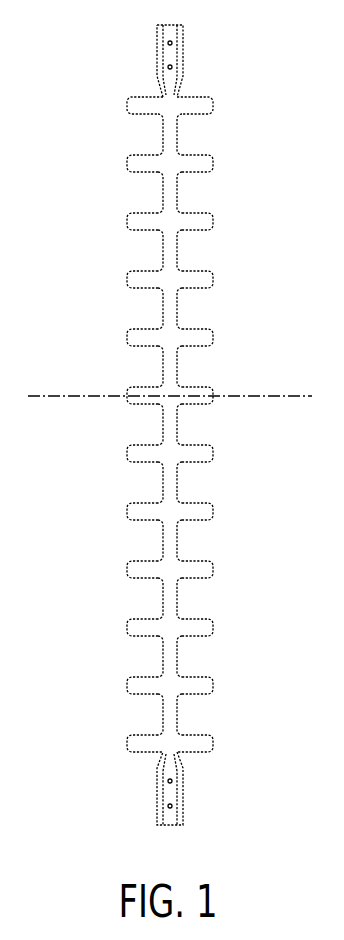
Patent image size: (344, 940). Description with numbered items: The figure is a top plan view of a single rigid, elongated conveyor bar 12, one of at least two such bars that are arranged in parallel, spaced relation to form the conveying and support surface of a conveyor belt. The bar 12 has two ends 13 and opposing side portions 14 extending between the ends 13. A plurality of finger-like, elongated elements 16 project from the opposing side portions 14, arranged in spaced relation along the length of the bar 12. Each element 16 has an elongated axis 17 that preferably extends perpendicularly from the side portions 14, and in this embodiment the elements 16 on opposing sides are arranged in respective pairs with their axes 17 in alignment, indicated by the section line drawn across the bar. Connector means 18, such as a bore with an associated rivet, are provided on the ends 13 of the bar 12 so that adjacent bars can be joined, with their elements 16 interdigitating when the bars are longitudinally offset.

The conveyor bar 12 is at (183, 425).
The ends 13 is at (183, 53).
The opposing side portions 14 is at (177, 253).
The finger-like elongated elements 16 is at (213, 338).
The elongated axis 17 is at (62, 392).
The connector means 18 is at (168, 43).